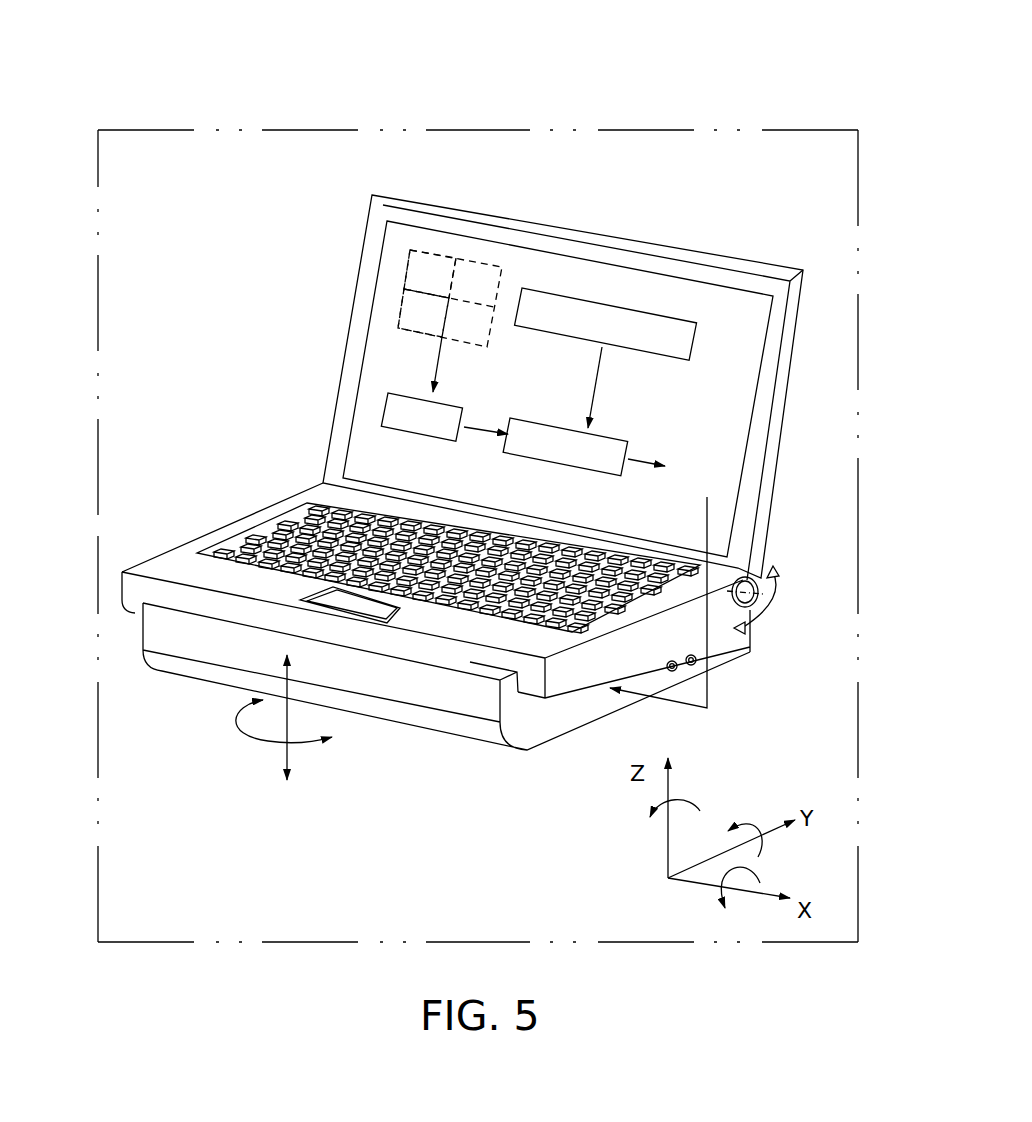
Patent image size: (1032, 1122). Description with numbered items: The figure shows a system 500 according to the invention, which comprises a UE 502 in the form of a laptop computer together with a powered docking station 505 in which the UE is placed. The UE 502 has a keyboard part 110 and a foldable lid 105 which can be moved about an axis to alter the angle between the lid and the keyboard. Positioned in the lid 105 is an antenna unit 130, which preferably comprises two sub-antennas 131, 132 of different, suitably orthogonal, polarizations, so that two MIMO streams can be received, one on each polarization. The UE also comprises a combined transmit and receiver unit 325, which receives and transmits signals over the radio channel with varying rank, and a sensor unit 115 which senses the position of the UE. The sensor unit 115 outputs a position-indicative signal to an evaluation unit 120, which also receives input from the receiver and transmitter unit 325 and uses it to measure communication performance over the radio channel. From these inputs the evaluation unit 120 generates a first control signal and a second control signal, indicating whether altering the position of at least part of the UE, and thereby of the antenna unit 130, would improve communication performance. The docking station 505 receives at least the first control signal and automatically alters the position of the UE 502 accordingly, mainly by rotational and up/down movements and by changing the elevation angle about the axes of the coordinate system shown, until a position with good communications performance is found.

The system 500 is at (702, 66).
The UE 502 is at (478, 168).
The foldable lid 105 is at (806, 354).
The keyboard part 110 is at (217, 521).
The powered docking station 505 is at (406, 748).
The antenna unit 130 is at (487, 266).
The sub-antenna 131 is at (437, 288).
The sub-antenna 132 is at (443, 320).
The transmit unit and receiver unit 325 is at (417, 441).
The sensor unit 115 is at (630, 305).
The evaluation unit 120 is at (611, 430).